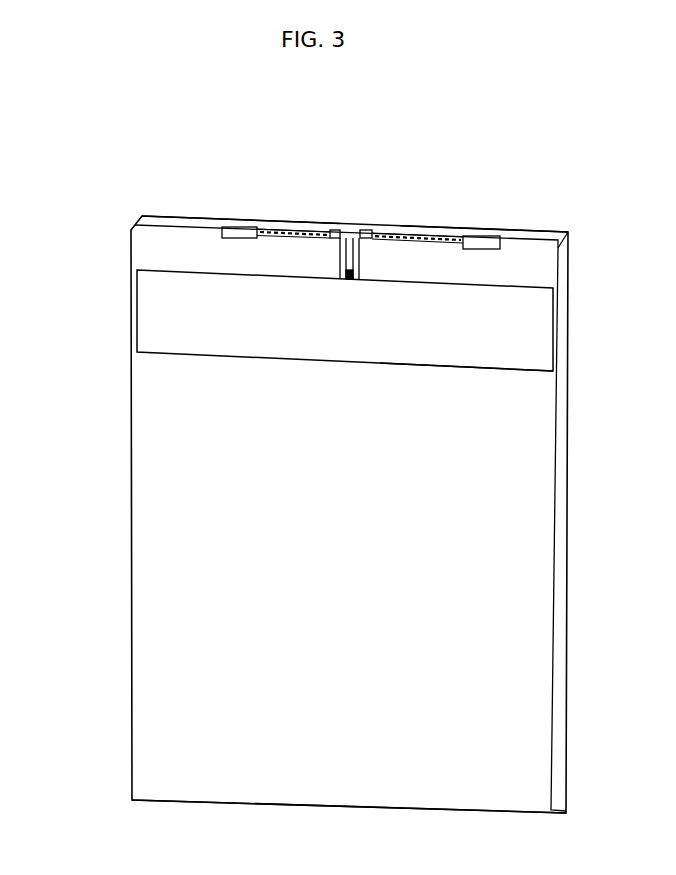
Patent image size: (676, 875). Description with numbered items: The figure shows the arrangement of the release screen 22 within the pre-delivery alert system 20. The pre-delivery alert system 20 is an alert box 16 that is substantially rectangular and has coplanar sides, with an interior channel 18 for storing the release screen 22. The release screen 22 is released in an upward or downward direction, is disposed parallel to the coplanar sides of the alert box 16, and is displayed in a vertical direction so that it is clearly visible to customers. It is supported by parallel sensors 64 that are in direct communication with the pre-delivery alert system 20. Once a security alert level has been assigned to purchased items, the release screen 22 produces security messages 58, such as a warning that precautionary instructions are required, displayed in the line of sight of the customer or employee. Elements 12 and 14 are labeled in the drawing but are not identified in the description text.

The power port side 12 is at (472, 232).
The top edge of housing 14 is at (173, 222).
The alert box 16 is at (443, 368).
The interior channel 18 is at (165, 252).
The pre-delivery alert system 20 is at (383, 209).
The release screen 22 is at (505, 350).
The security messages 58 is at (170, 323).
The parallel sensors 64 is at (337, 231).